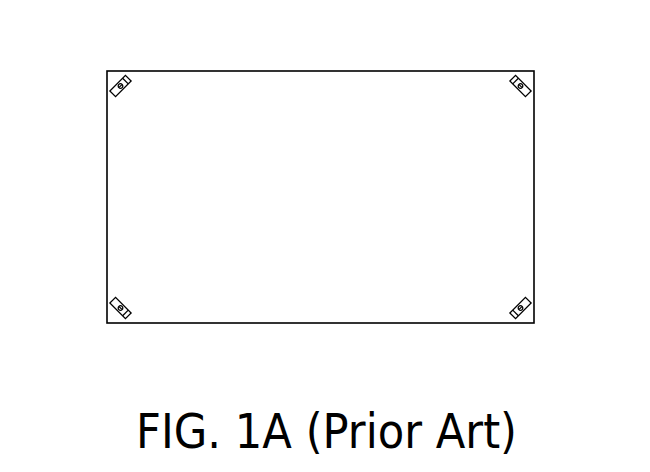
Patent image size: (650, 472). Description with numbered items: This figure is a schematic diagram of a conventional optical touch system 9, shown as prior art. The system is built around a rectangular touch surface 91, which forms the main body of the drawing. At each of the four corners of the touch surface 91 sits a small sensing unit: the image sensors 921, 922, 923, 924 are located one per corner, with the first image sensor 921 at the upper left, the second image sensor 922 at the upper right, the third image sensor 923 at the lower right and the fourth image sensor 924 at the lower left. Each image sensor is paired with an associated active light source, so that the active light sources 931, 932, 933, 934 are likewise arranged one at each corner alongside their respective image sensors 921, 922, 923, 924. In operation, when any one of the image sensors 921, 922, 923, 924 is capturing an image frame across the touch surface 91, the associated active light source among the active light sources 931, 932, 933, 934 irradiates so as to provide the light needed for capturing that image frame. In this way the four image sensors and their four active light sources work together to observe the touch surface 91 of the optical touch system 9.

The optical touch system 9 is at (571, 68).
The touch surface 91 is at (323, 93).
The image sensor 921 is at (109, 93).
The image sensor 922 is at (532, 95).
The image sensor 923 is at (513, 325).
The image sensor 924 is at (109, 302).
The active light source 931 is at (122, 78).
The active light source 932 is at (522, 74).
The active light source 933 is at (536, 298).
The active light source 934 is at (123, 324).